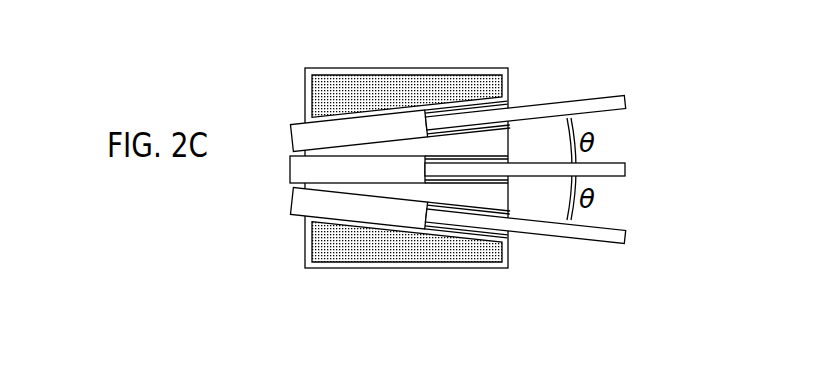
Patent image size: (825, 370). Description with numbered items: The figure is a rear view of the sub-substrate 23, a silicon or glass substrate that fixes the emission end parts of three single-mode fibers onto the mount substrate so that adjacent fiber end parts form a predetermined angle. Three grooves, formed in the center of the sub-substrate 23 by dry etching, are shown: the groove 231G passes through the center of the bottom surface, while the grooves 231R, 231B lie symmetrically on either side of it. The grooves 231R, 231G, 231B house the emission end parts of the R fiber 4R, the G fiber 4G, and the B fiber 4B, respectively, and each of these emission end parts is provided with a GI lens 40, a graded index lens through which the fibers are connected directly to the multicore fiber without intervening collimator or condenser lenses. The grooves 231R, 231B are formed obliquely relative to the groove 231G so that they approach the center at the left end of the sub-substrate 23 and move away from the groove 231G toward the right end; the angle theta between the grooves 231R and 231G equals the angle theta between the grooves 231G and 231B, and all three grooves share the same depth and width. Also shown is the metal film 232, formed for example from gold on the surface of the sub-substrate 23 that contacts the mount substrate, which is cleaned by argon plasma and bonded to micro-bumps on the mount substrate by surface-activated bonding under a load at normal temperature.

The sub-substrate 23 is at (521, 68).
The metal film 232 is at (369, 88).
The groove 231B is at (450, 112).
The groove 231G is at (490, 178).
The groove 231R is at (452, 235).
The GI lens 40 is at (285, 120).
The B fiber 4B is at (627, 103).
The G fiber 4G is at (627, 170).
The R fiber 4R is at (627, 236).